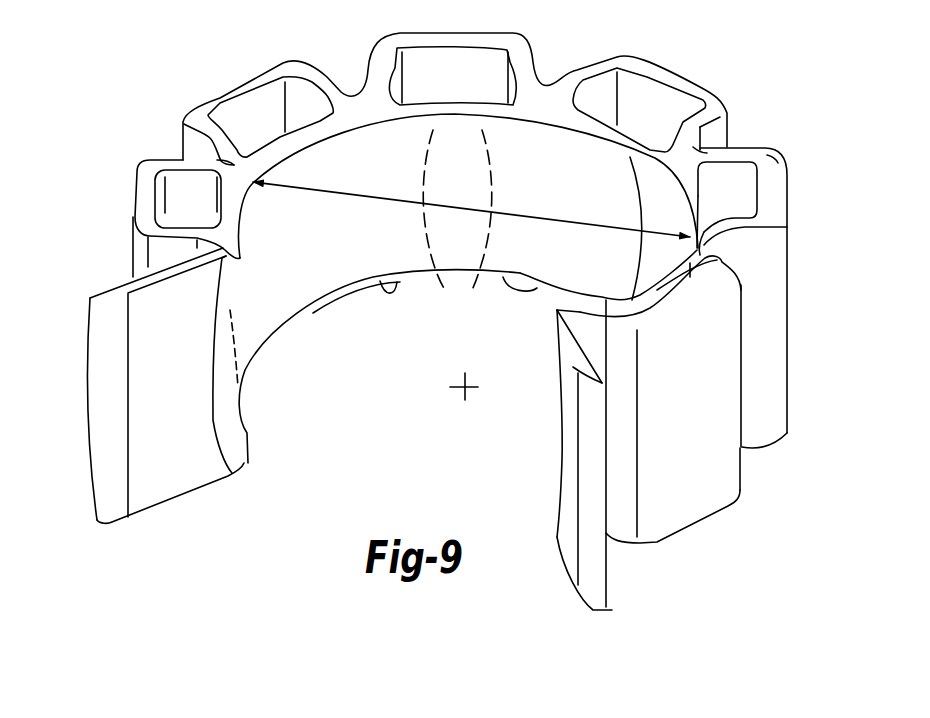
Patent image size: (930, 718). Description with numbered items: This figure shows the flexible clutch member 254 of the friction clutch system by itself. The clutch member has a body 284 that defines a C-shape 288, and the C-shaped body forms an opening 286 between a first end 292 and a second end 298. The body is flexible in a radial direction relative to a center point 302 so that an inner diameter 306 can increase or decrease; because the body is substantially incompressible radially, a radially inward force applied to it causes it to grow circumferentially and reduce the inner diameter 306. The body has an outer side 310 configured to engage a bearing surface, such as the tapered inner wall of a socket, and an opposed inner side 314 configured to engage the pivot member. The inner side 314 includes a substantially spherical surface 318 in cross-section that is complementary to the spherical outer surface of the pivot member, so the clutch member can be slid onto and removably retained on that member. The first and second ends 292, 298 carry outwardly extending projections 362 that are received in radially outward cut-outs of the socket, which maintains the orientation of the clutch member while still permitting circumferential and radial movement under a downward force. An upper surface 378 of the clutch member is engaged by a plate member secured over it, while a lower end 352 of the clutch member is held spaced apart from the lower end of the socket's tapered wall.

The flexible clutch member 254 is at (726, 85).
The body 284 is at (197, 112).
The inner diameter 306 is at (368, 198).
The upper surface 378 is at (772, 165).
The C-shape 288 is at (108, 269).
The outer side 310 is at (787, 338).
The spherical surface 318 is at (353, 248).
The inner side 314 is at (265, 280).
The center point 302 is at (470, 383).
The first end 292 is at (241, 463).
The second end 298 is at (557, 537).
The outwardly extending projections 362 is at (97, 522).
The opening 286 is at (320, 520).
The lower end 352 is at (743, 448).